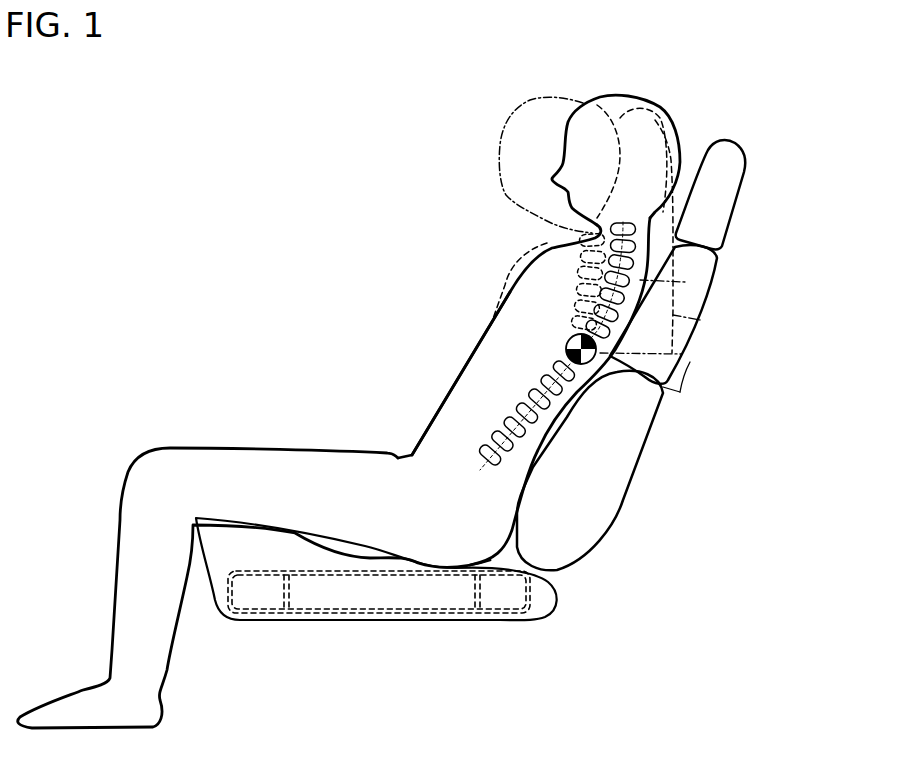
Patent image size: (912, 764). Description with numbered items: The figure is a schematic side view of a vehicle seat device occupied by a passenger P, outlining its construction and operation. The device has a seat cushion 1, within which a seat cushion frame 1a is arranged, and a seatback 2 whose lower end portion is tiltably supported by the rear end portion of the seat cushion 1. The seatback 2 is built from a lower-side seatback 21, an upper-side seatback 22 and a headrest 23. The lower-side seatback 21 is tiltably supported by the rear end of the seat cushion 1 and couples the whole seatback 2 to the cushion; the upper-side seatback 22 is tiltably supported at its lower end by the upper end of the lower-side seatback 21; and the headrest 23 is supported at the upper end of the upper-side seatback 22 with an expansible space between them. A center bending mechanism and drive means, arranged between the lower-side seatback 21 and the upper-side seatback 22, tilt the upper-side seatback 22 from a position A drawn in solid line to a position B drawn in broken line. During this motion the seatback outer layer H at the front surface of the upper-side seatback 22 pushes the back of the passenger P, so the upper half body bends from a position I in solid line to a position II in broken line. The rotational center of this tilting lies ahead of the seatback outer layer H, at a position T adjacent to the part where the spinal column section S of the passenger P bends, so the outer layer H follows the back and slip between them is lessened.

The seat cushion 1 is at (363, 597).
The seat cushion frame 1a is at (500, 622).
The seatback 2 is at (703, 341).
The lower-side seatback 21 is at (615, 468).
The upper-side seatback 22 is at (708, 302).
The headrest 23 is at (746, 176).
The position I is at (670, 112).
The position II is at (518, 112).
The seatback outer layer H is at (673, 282).
The position T is at (566, 346).
The spinal column section S is at (528, 397).
The passenger P is at (423, 443).
The position A is at (663, 387).
The position B is at (686, 357).